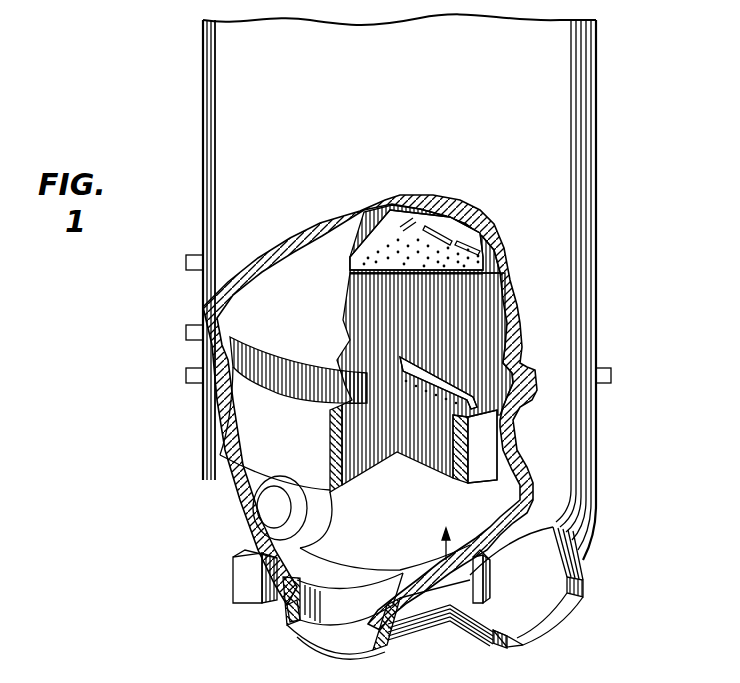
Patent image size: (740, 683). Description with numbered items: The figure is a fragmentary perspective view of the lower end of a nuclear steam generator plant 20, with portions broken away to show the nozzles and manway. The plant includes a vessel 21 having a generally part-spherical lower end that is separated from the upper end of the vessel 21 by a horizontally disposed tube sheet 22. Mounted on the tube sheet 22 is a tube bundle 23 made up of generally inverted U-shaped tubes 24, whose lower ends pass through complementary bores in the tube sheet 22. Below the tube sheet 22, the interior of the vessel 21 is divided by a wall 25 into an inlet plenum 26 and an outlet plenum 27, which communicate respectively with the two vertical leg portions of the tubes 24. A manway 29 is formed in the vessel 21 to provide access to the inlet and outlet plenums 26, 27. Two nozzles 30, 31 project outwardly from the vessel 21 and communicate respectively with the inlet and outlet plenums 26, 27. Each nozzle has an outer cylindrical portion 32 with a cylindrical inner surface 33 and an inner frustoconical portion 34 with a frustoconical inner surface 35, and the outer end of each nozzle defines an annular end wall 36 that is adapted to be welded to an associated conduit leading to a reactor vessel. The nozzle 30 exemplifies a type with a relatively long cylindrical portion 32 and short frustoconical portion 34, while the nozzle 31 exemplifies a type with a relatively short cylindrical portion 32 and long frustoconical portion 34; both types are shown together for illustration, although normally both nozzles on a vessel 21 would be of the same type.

The nuclear steam generator plant 20 is at (676, 97).
The vessel 21 is at (600, 200).
The tube sheet 22 is at (252, 424).
The tube bundle 23 is at (378, 306).
The tubes 24 is at (367, 336).
The wall 25 is at (440, 550).
The inlet plenum 26 is at (447, 562).
The outlet plenum 27 is at (504, 490).
The manway 29 is at (284, 508).
The nozzle 30 is at (283, 612).
The nozzle 31 is at (578, 557).
The outer cylindrical portion 32 is at (556, 616).
The cylindrical inner surface 33 is at (350, 640).
The inner frustoconical portion 34 is at (420, 592).
The frustoconical inner surface 35 is at (368, 608).
The annular end wall 36 is at (303, 642).